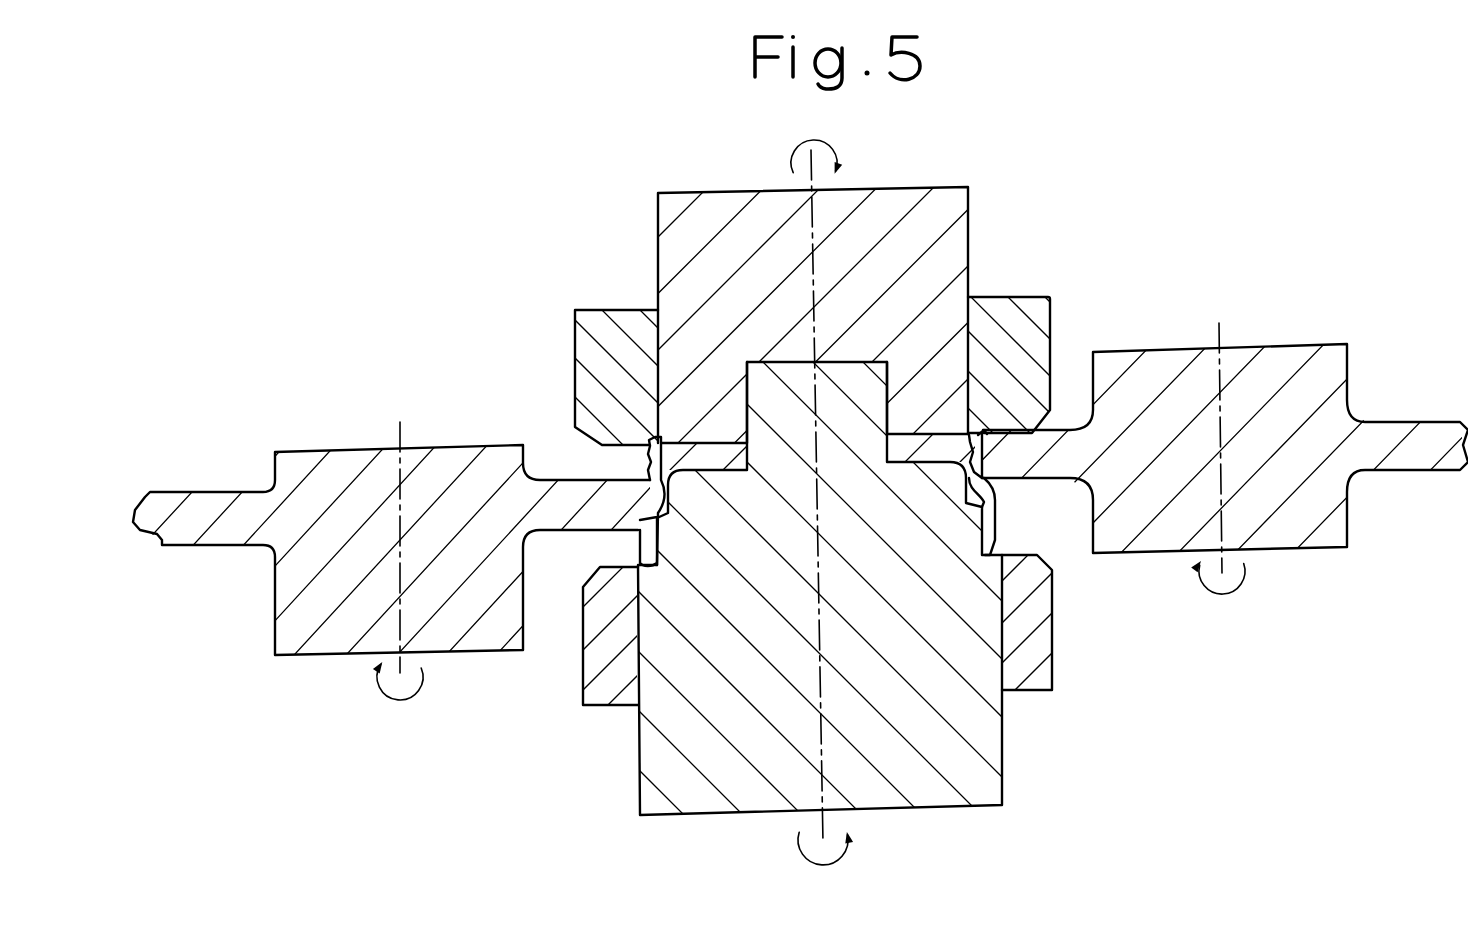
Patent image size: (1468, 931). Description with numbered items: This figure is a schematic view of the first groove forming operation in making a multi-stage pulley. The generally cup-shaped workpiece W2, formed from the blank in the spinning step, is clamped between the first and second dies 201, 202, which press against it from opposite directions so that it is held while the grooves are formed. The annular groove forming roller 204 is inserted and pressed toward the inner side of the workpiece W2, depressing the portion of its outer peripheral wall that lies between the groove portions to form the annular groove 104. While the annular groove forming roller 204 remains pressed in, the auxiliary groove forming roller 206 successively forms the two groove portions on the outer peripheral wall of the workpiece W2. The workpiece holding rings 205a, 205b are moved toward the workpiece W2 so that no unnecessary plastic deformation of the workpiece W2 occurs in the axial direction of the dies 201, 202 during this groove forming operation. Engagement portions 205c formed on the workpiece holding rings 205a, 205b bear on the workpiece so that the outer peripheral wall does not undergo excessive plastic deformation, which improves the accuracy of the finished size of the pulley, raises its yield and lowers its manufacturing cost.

The first die 201 is at (701, 236).
The second die 202 is at (720, 752).
The annular groove forming roller 204 is at (328, 497).
The auxiliary groove forming roller 206 is at (1305, 388).
The workpiece holding ring 205a is at (1015, 323).
The workpiece holding ring 205b is at (1032, 665).
The engagement portions 205c is at (650, 448).
The annular groove 104 is at (993, 527).
The workpiece W2 is at (993, 488).